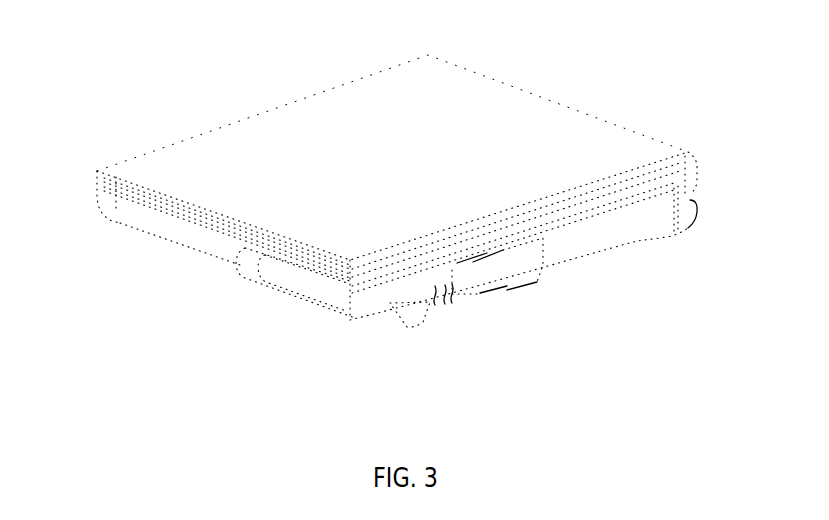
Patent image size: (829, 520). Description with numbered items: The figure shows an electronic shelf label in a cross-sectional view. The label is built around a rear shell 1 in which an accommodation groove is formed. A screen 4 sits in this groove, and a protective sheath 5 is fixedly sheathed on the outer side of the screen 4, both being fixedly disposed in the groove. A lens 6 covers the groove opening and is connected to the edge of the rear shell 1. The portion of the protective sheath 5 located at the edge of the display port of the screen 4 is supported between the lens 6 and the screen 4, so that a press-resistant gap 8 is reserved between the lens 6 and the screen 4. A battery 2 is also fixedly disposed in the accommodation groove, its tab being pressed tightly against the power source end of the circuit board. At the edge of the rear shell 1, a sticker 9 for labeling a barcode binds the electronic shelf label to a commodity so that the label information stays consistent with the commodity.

The rear shell 1 is at (195, 240).
The battery 2 is at (528, 257).
The screen 4 is at (560, 222).
The protective sheath 5 is at (393, 290).
The lens 6 is at (500, 127).
The press-resistant gap 8 is at (592, 198).
The sticker 9 is at (298, 282).